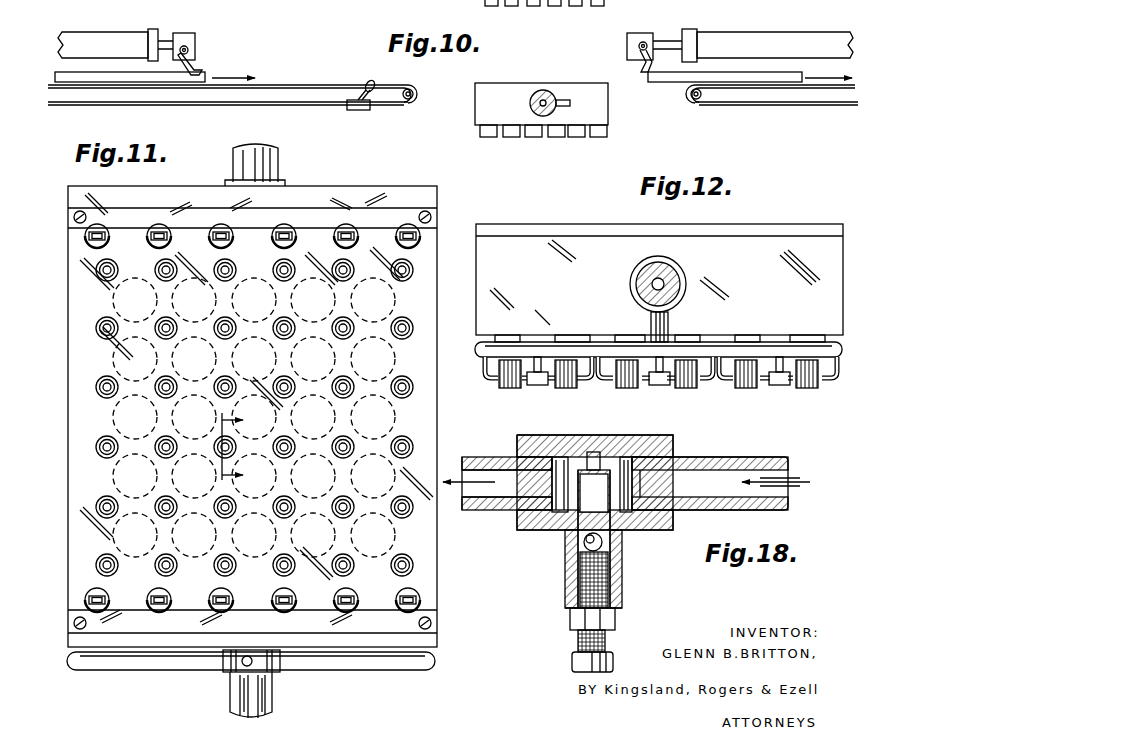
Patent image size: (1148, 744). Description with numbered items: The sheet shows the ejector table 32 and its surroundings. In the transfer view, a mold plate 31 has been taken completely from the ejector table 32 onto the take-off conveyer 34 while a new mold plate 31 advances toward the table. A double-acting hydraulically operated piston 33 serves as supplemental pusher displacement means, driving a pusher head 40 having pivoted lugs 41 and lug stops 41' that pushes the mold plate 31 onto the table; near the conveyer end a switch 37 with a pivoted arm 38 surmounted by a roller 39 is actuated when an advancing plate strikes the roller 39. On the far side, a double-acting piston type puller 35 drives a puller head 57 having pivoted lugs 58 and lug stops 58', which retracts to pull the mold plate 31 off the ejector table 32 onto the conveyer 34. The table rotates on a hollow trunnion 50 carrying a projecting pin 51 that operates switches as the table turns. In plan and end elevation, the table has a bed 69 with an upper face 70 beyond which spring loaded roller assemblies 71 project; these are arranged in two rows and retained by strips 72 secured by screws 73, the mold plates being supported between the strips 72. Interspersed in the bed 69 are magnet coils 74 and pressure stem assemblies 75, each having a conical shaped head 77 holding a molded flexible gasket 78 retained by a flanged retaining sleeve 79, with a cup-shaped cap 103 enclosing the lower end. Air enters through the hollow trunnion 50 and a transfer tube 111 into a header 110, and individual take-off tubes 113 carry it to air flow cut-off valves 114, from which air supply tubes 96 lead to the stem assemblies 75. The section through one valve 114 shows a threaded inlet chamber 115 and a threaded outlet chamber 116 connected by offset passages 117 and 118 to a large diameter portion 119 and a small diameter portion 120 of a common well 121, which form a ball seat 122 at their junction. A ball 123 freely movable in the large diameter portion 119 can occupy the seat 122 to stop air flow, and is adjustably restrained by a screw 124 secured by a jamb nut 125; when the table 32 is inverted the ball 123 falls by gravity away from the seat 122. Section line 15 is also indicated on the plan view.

In FIG. 11, the section line 15 is at (219, 448).
In FIG. 10, the mold plate 31 is at (75, 72).
In FIG. 10, the ejector table 32 is at (598, 104).
In FIG. 11, the ejector table 32 is at (368, 184).
In FIG. 12, the ejector table 32 is at (806, 242).
In FIG. 10, the double-acting hydraulically operated piston 33 is at (110, 34).
In FIG. 10, the take-off conveyer 34 is at (806, 104).
In FIG. 10, the puller 35 is at (797, 48).
In FIG. 10, the switch 37 is at (352, 110).
In FIG. 10, the pivoted arm 38 is at (356, 82).
In FIG. 10, the roller 39 is at (372, 80).
In FIG. 10, the pusher head 40 is at (192, 40).
In FIG. 10, the pivoted lugs 41 is at (210, 59).
In FIG. 10, the lug stops 41' is at (182, 27).
In FIG. 10, the trunnion 50 is at (540, 92).
In FIG. 11, the trunnion 50 is at (274, 700).
In FIG. 12, the trunnion 50 is at (668, 268).
In FIG. 10, the projecting pin 51 is at (563, 100).
In FIG. 10, the puller head 57 is at (646, 33).
In FIG. 10, the pivoted lugs 58 is at (638, 72).
In FIG. 10, the lug stops 58' is at (619, 45).
In FIG. 11, the bed 69 is at (388, 196).
In FIG. 12, the bed 69 is at (508, 255).
In FIG. 11, the upper face 70 is at (425, 248).
In FIG. 12, the upper face 70 is at (765, 238).
In FIG. 11, the spring loaded roller assemblies 71 is at (203, 237).
In FIG. 11, the strips 72 is at (197, 210).
In FIG. 12, the strips 72 is at (573, 228).
In FIG. 11, the screws 73 is at (80, 211).
In FIG. 11, the magnet coils 74 is at (368, 272).
In FIG. 11, the pressure stem assemblies 75 is at (95, 275).
In FIG. 12, the pressure stem assemblies 75 is at (521, 393).
In FIG. 11, the conical shaped head 77 is at (392, 452).
In FIG. 11, the molded flexible gasket 78 is at (105, 277).
In FIG. 11, the flanged retaining sleeve 79 is at (283, 325).
In FIG. 12, the air supply tube 96 is at (525, 375).
In FIG. 18, the air supply tube 96 is at (494, 500).
In FIG. 10, the cup-shaped cap 103 is at (514, 6).
In FIG. 12, the cup-shaped cap 103 is at (513, 385).
In FIG. 11, the header 110 is at (127, 666).
In FIG. 12, the header 110 is at (780, 345).
In FIG. 11, the transfer tube 111 is at (245, 665).
In FIG. 12, the transfer tube 111 is at (648, 320).
In FIG. 12, the take-off tubes 113 is at (492, 378).
In FIG. 18, the take-off tubes 113 is at (790, 490).
In FIG. 12, the air flow cut-off valve 114 is at (787, 370).
In FIG. 18, the air flow cut-off valve 114 is at (668, 543).
In FIG. 18, the threaded inlet chamber 115 is at (688, 470).
In FIG. 18, the threaded outlet chamber 116 is at (562, 440).
In FIG. 18, the offset passage 117 is at (608, 522).
In FIG. 18, the offset passage 118 is at (582, 452).
In FIG. 18, the large diameter portion 119 is at (600, 535).
In FIG. 18, the small diameter portion 120 is at (607, 447).
In FIG. 18, the common well 121 is at (588, 501).
In FIG. 18, the ball seat 122 is at (566, 530).
In FIG. 18, the ball 123 is at (604, 562).
In FIG. 18, the screw 124 is at (568, 600).
In FIG. 18, the jamb nut 125 is at (572, 620).